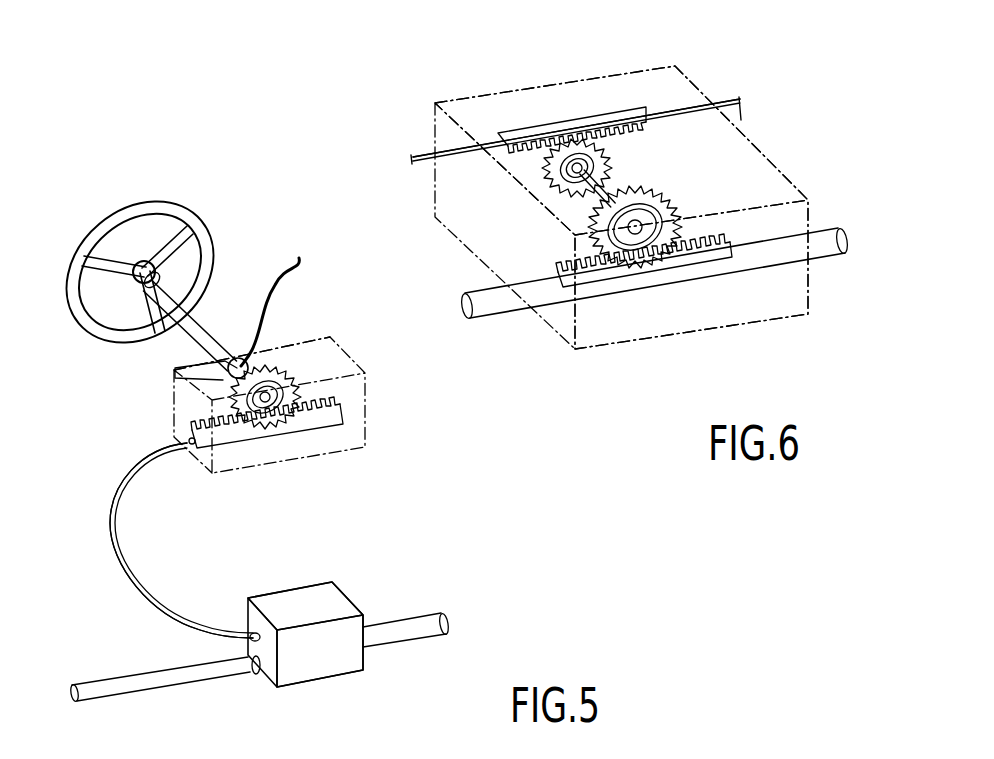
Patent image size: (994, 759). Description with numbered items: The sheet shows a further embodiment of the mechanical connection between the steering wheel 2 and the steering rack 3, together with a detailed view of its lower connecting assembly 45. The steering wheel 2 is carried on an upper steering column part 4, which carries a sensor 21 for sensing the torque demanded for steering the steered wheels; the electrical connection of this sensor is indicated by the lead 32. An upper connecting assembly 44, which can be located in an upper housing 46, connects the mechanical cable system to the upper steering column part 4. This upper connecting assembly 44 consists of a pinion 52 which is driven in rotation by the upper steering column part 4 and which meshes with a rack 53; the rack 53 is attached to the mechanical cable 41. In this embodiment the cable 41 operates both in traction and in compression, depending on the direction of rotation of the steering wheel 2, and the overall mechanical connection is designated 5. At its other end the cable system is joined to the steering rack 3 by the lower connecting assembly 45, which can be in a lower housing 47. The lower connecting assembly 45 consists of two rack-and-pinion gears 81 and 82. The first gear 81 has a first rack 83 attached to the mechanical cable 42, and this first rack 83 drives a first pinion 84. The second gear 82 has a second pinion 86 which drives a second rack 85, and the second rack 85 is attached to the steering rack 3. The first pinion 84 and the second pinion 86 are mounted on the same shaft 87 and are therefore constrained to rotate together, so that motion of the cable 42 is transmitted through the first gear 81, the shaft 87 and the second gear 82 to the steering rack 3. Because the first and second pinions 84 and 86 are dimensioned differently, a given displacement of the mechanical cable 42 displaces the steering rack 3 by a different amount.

In FIG. 5, the steering wheel 2 is at (103, 228).
In FIG. 5, the steering rack 3 is at (398, 630).
In FIG. 6, the steering rack 3 is at (757, 260).
In FIG. 5, the upper steering column part 4 is at (202, 333).
In FIG. 5, the steering system 5 is at (101, 490).
In FIG. 5, the sensor 21 is at (174, 376).
In FIG. 5, the signal cable 32 is at (283, 270).
In FIG. 5, the cable 41 is at (128, 573).
In FIG. 6, the mechanical cable 42 is at (447, 150).
In FIG. 5, the upper connecting assembly 44 is at (377, 416).
In FIG. 5, the lower connecting assembly 45 is at (339, 682).
In FIG. 6, the lower connecting assembly 45 is at (756, 134).
In FIG. 5, the upper housing 46 is at (312, 330).
In FIG. 5, the lower housing 47 is at (340, 590).
In FIG. 6, the lower housing 47 is at (675, 64).
In FIG. 5, the pinion 52 is at (293, 380).
In FIG. 5, the rack 53 is at (271, 435).
In FIG. 6, the first gear 81 is at (513, 168).
In FIG. 6, the second gear 82 is at (699, 214).
In FIG. 6, the first rack 83 is at (613, 117).
In FIG. 6, the first pinion 84 is at (583, 142).
In FIG. 6, the second rack 85 is at (677, 267).
In FIG. 6, the second pinion 86 is at (577, 250).
In FIG. 6, the shaft 87 is at (620, 173).